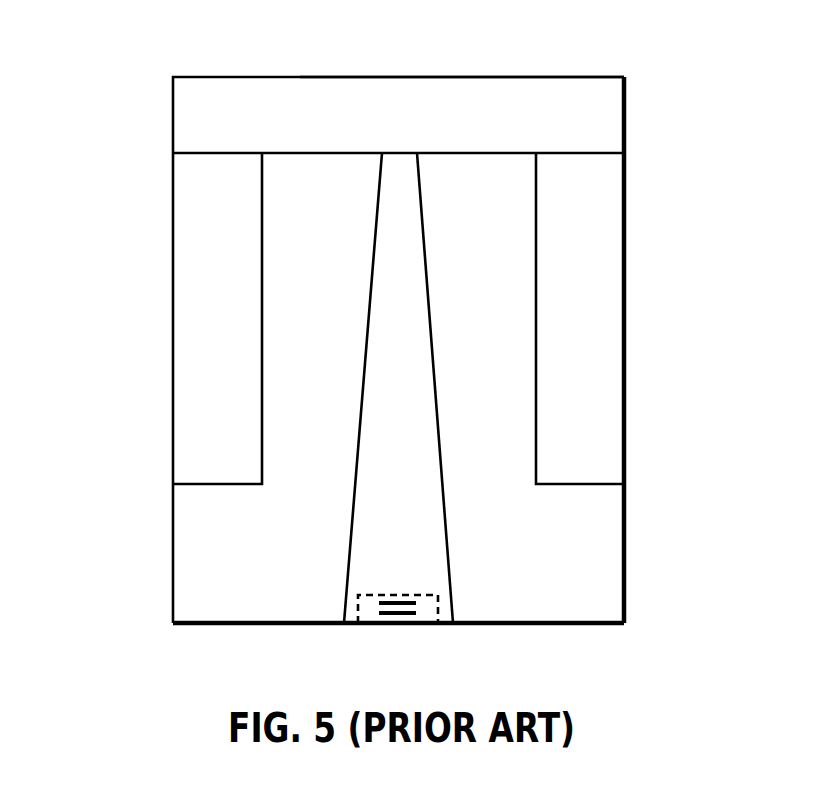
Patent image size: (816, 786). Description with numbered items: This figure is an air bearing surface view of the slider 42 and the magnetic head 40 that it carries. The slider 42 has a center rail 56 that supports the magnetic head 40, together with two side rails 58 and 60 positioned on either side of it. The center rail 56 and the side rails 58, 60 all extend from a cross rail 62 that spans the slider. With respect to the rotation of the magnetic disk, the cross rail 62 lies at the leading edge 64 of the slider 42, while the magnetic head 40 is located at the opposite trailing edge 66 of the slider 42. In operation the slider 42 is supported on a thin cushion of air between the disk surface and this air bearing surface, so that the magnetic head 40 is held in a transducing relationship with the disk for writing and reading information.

The magnetic head 40 is at (368, 628).
The slider 42 is at (148, 566).
The center rail 56 is at (386, 265).
The side rail 58 is at (187, 226).
The side rail 60 is at (597, 225).
The cross rail 62 is at (310, 85).
The leading edge 64 is at (468, 77).
The trailing edge 66 is at (521, 626).